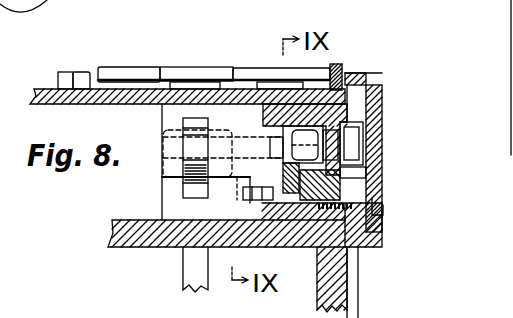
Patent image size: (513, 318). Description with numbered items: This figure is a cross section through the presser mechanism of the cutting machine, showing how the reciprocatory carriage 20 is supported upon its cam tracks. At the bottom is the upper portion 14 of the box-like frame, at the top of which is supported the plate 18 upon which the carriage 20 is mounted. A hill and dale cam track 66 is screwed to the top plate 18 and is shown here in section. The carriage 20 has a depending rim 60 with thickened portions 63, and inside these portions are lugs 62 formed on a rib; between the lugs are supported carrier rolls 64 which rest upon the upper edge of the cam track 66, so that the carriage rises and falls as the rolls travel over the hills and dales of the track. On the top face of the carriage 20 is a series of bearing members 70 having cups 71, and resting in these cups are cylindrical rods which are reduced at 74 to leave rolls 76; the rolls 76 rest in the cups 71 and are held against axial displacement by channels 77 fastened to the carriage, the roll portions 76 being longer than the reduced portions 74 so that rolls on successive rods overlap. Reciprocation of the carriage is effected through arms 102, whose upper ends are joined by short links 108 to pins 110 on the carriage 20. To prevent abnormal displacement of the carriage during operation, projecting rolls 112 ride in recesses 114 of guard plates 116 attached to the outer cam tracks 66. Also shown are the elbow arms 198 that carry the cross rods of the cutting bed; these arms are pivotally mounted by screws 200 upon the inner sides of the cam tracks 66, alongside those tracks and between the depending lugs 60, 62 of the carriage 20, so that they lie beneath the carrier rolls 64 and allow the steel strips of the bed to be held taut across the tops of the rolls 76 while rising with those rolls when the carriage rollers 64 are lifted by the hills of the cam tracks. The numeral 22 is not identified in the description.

The upper portion 14 is at (343, 279).
The plate 18 is at (130, 247).
The reciprocatory carriage 20 is at (43, 105).
The drum 22 is at (115, 6).
The depending rim 60 is at (345, 108).
The lugs 62 is at (273, 112).
The thickened portions 63 is at (378, 214).
The carrier rolls 64 is at (360, 66).
The cam tracks 66 is at (348, 249).
The bearing members 70 is at (58, 88).
The cups 71 is at (74, 72).
The reduced portions 74 is at (190, 77).
The rolls 76 is at (122, 72).
The channels 77 is at (336, 66).
The arms 102 is at (192, 270).
The short links 108 is at (185, 183).
The pins 110 is at (158, 138).
The projecting rolls 112 is at (362, 125).
The recesses 114 is at (358, 172).
The guard plates 116 is at (355, 74).
The elbow arms 198 is at (271, 186).
The screws 200 is at (263, 168).